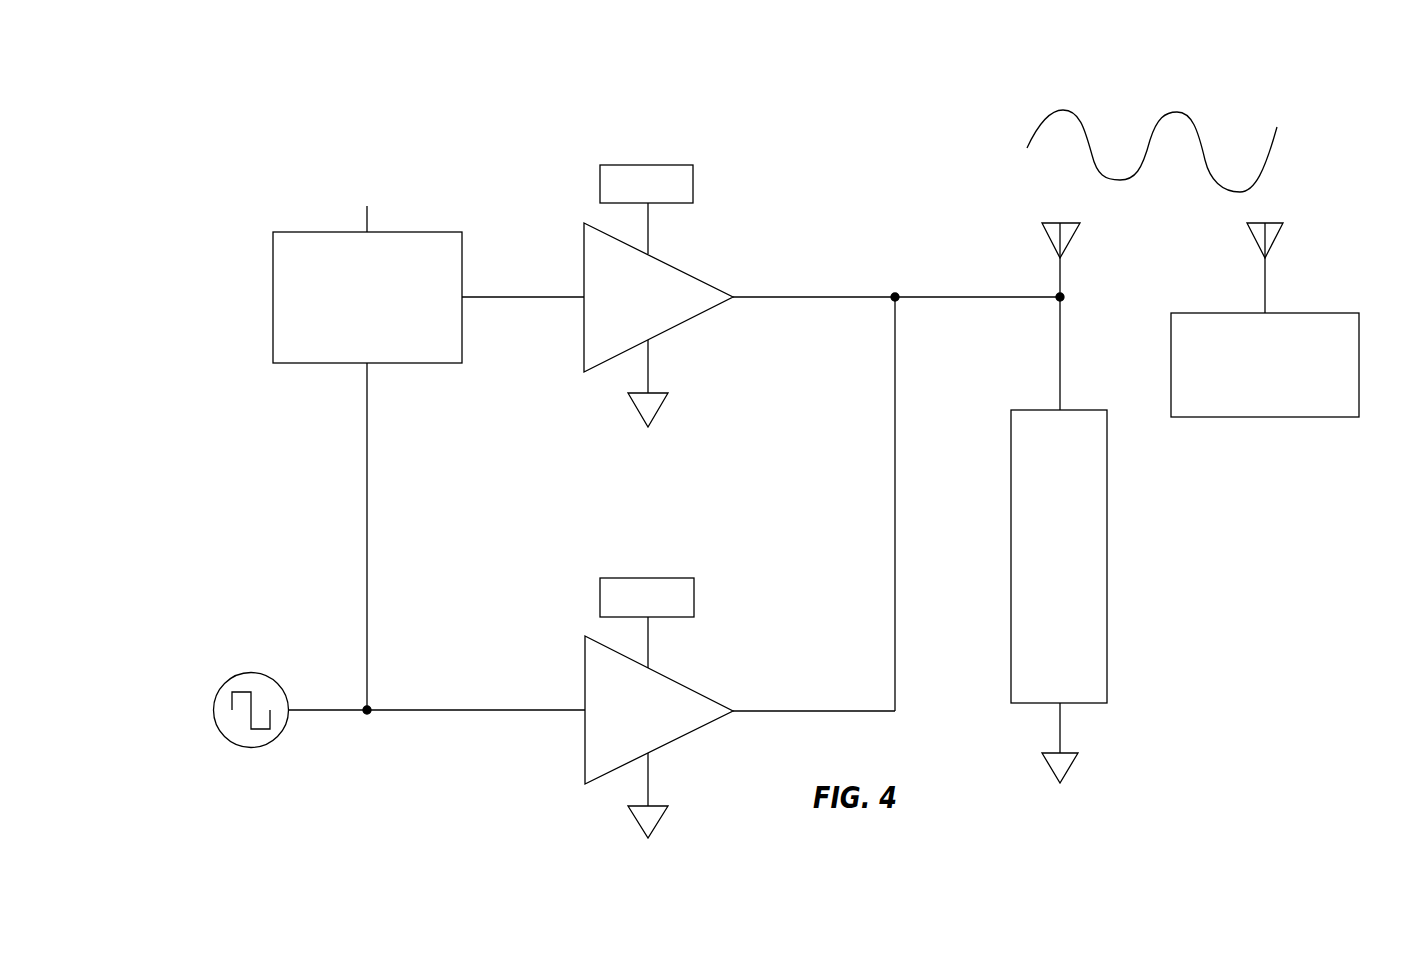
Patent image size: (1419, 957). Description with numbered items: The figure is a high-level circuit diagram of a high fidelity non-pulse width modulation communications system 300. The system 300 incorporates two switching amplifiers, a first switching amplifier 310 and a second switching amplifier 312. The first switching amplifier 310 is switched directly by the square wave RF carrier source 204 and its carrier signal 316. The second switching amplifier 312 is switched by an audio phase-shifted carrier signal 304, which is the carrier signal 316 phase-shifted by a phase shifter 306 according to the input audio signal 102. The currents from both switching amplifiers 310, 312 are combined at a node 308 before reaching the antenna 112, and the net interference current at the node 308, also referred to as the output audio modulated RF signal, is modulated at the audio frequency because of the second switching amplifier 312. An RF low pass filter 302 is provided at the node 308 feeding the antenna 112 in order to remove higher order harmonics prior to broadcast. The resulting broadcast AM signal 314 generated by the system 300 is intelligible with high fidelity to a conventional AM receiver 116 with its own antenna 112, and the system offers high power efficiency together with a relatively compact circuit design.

The high fidelity non-pulse width modulation communications system 300 is at (276, 501).
The input audio signal 102 is at (365, 188).
The phase shifter 306 is at (442, 359).
The audio phase-shifted carrier signal 304 is at (543, 293).
The second switching amplifier 312 is at (648, 311).
The first switching amplifier 310 is at (648, 726).
The carrier signal 316 is at (368, 705).
The square wave RF carrier source 204 is at (212, 710).
The node 308 is at (893, 302).
The broadcast AM signal 314 is at (1027, 108).
The antenna 112 is at (1062, 260).
The AM receiver 116 is at (1353, 412).
The RF low pass filter 302 is at (1092, 697).